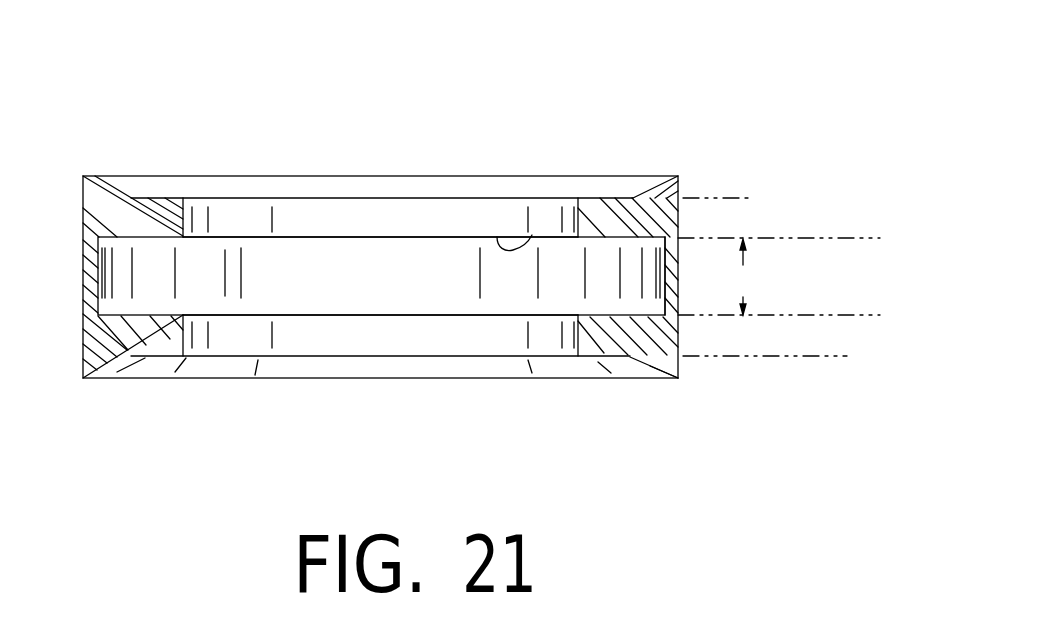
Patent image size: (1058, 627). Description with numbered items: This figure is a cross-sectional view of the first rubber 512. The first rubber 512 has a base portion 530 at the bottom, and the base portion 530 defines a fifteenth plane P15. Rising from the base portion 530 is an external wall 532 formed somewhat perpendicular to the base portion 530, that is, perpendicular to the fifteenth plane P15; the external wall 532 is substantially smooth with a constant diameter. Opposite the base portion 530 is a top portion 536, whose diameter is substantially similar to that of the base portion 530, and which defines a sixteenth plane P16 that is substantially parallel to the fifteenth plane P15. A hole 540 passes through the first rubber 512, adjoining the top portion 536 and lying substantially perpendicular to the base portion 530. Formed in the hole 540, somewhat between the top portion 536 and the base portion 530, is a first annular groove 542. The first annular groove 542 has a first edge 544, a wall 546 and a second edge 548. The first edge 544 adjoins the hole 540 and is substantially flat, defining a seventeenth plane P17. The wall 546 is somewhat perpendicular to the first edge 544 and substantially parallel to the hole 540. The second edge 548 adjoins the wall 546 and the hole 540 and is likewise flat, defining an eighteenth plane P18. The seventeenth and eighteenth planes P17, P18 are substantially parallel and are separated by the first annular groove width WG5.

The first rubber 512 is at (657, 122).
The base portion 530 is at (587, 357).
The external wall 532 is at (83, 198).
The top portion 536 is at (590, 197).
The hole 540 is at (395, 218).
The first annular groove 542 is at (305, 287).
The first edge 544 is at (532, 235).
The wall 546 is at (225, 288).
The second edge 548 is at (343, 315).
The fifteenth plane P15 is at (792, 358).
The sixteenth plane P16 is at (695, 197).
The seventeenth plane P17 is at (853, 238).
The eighteenth plane P18 is at (795, 315).
The first annular groove width WG5 is at (743, 277).